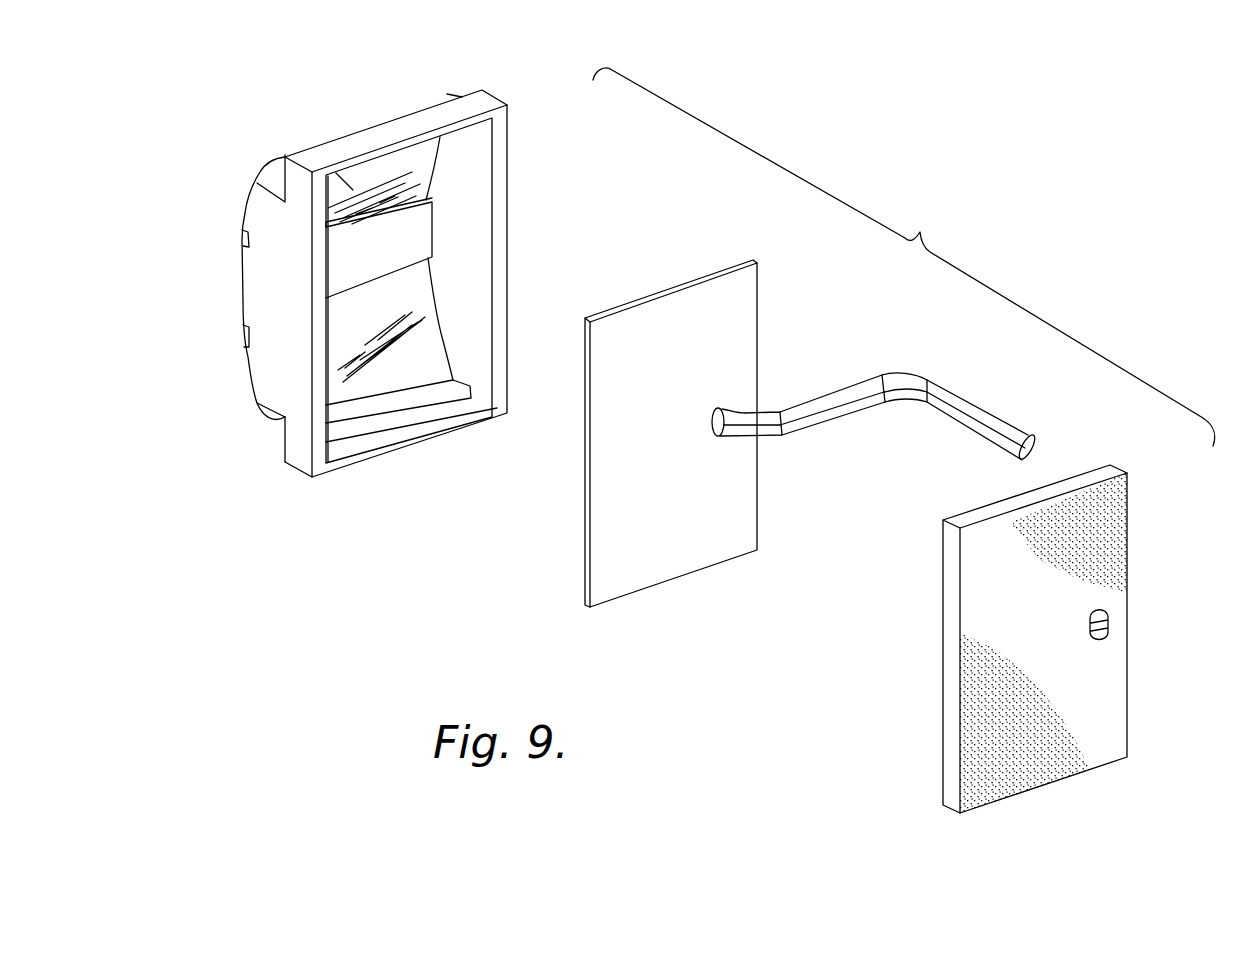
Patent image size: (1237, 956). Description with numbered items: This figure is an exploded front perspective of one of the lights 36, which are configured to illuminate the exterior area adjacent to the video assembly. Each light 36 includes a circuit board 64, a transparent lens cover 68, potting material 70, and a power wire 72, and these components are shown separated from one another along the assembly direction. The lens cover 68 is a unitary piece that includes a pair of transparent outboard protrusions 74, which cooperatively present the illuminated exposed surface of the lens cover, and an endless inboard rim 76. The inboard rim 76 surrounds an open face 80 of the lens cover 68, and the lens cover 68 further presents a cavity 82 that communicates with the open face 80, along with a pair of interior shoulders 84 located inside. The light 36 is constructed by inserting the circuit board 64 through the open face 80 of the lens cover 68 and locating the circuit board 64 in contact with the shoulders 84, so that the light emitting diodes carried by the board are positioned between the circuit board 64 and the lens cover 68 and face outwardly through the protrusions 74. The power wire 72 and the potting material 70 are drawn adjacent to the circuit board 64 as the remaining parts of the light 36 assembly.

The light 36 is at (974, 193).
The circuit board 64 is at (623, 535).
The transparent lens cover 68 is at (303, 452).
The potting material 70 is at (1105, 525).
The power wire 72 is at (902, 383).
The transparent outboard protrusions 74 is at (418, 150).
The endless inboard rim 76 is at (502, 225).
The open face 80 is at (427, 432).
The cavity 82 is at (413, 302).
The interior shoulders 84 is at (350, 188).